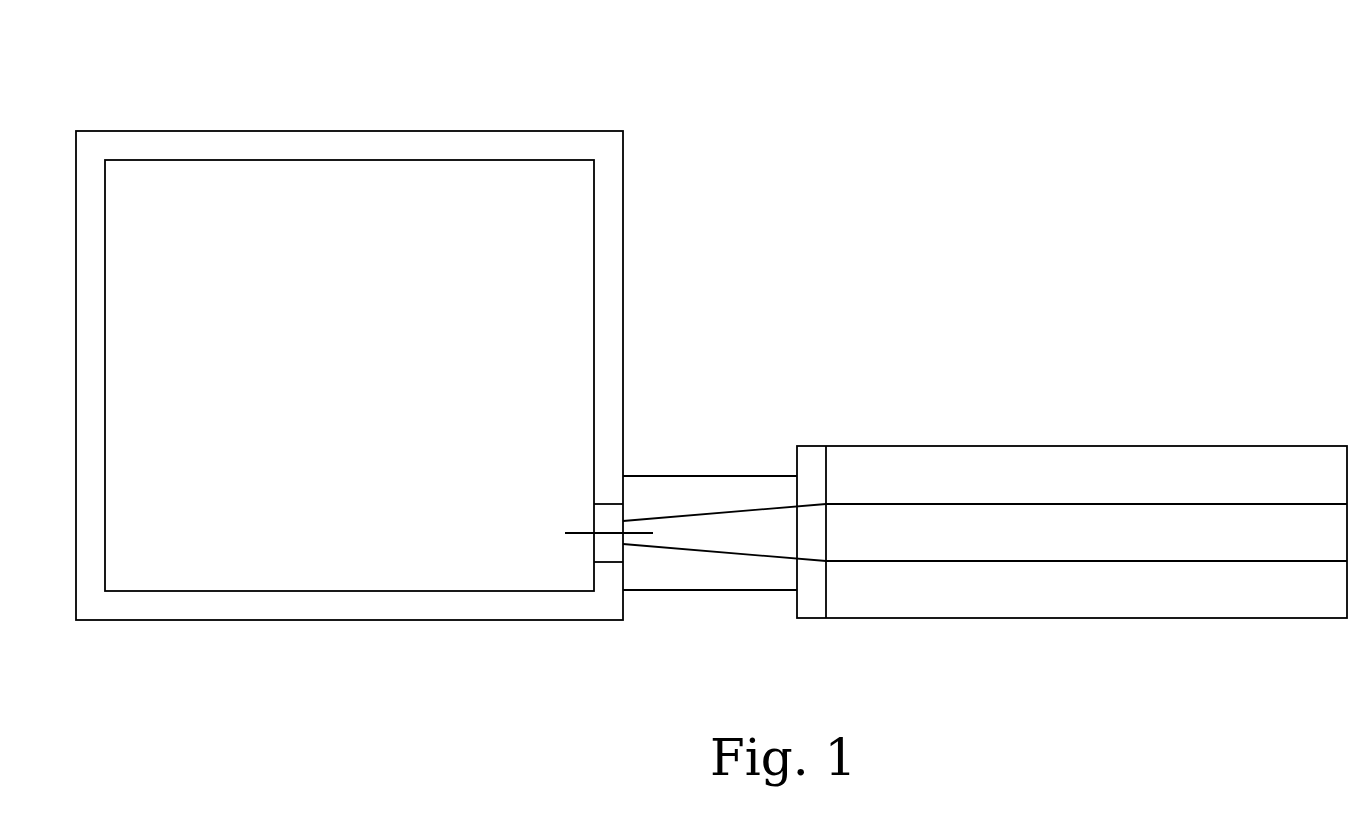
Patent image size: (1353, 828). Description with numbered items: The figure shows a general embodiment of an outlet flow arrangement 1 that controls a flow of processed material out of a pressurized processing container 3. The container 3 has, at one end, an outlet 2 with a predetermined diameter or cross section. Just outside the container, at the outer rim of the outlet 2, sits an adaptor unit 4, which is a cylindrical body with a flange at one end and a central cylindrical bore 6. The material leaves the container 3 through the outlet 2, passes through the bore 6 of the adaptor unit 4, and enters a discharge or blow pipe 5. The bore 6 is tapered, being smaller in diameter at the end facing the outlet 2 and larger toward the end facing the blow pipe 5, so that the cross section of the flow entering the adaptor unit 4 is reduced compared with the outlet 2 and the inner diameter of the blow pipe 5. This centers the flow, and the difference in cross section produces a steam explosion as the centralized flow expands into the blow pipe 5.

The outlet flow arrangement 1 is at (710, 476).
The outlet 2 is at (602, 550).
The pressurized processing container 3 is at (483, 130).
The adaptor unit 4 is at (710, 533).
The blow pipe 5 is at (867, 447).
The central cylindrical bore 6 is at (748, 532).